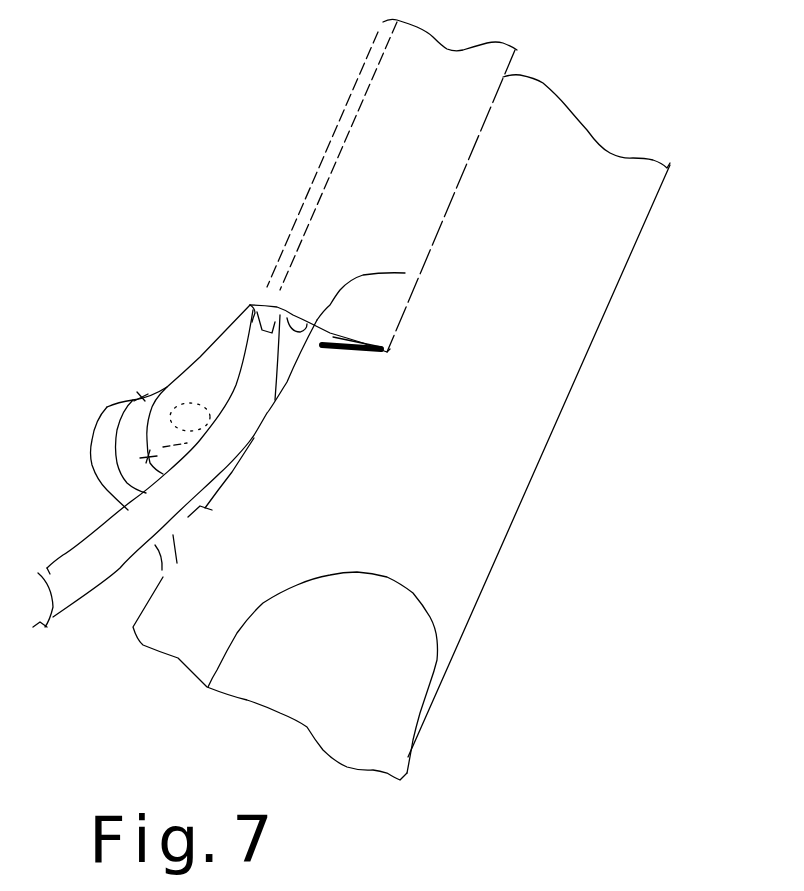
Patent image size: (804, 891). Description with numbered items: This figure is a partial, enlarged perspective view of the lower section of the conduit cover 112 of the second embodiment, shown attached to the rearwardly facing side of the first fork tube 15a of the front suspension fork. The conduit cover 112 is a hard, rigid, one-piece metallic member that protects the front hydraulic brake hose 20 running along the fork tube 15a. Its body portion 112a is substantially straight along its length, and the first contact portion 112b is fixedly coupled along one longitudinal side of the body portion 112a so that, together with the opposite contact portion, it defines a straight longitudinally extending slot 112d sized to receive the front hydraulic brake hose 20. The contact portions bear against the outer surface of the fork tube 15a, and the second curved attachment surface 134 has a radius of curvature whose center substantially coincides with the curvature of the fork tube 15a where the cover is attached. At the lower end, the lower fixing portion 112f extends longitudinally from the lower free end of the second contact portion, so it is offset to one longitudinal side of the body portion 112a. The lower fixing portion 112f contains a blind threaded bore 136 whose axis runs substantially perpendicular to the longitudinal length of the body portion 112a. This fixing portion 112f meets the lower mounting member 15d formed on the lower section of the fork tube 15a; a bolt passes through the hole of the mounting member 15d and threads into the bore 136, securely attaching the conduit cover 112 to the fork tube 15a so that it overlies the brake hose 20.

The conduit cover 112 is at (298, 163).
The body portion 112a is at (266, 289).
The first contact portion 112b is at (349, 350).
The slot 112d is at (405, 273).
The lower fixing portion 112f is at (141, 396).
The second curved attachment surface 134 is at (329, 346).
The threaded bore 136 is at (125, 463).
The first fork tube 15a is at (563, 398).
The lower mounting member 15d is at (99, 425).
The front hydraulic brake hose 20 is at (283, 383).